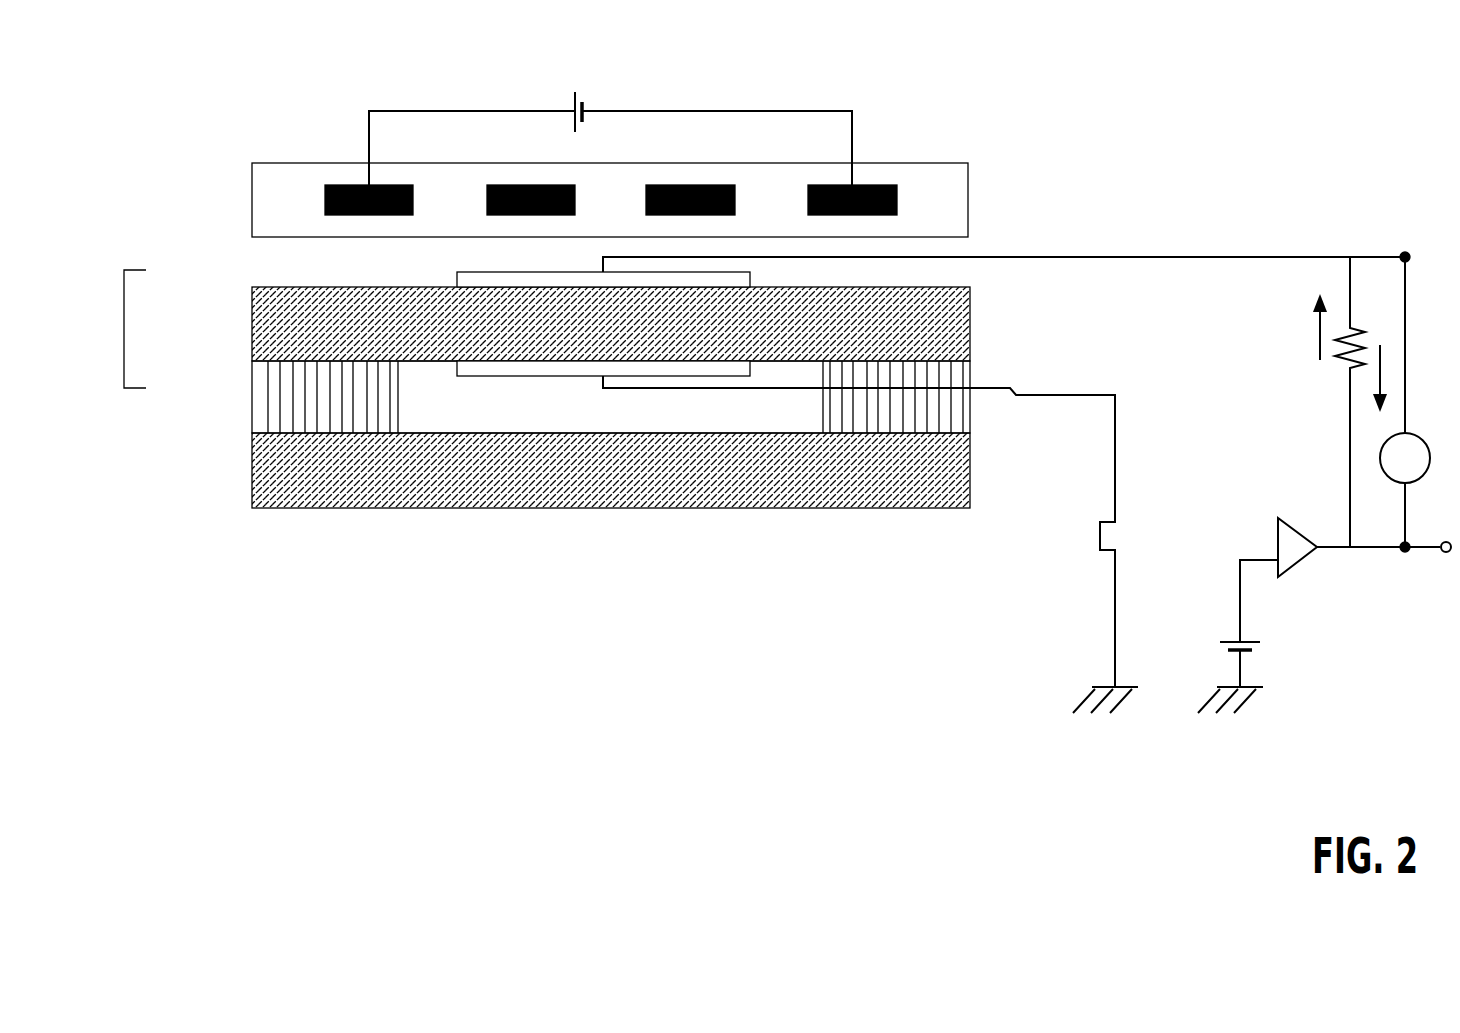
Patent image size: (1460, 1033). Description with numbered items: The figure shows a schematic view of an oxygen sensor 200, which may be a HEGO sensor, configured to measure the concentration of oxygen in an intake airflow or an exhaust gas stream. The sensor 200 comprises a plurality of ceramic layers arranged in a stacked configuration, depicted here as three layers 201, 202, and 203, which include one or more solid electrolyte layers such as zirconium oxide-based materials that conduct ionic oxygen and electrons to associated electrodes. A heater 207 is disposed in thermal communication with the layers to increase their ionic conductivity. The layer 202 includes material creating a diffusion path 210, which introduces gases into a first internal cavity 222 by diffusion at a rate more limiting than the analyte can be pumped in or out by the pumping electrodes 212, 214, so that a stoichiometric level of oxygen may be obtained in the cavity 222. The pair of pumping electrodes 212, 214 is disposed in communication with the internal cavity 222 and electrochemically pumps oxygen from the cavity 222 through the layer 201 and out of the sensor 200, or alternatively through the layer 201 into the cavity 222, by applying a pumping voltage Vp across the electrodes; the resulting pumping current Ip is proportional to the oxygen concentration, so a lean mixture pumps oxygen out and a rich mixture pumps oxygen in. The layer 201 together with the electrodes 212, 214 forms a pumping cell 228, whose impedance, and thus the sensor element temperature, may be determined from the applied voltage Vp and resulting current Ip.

The oxygen sensor 200 is at (959, 96).
The heater 207 is at (325, 188).
The layer 201 is at (252, 302).
The layer 202 is at (252, 375).
The layer 203 is at (252, 497).
The diffusion path 210 is at (288, 413).
The pumping electrode 212 is at (459, 274).
The pumping electrode 214 is at (459, 375).
The first internal cavity 222 is at (528, 409).
The pumping cell 228 is at (123, 347).